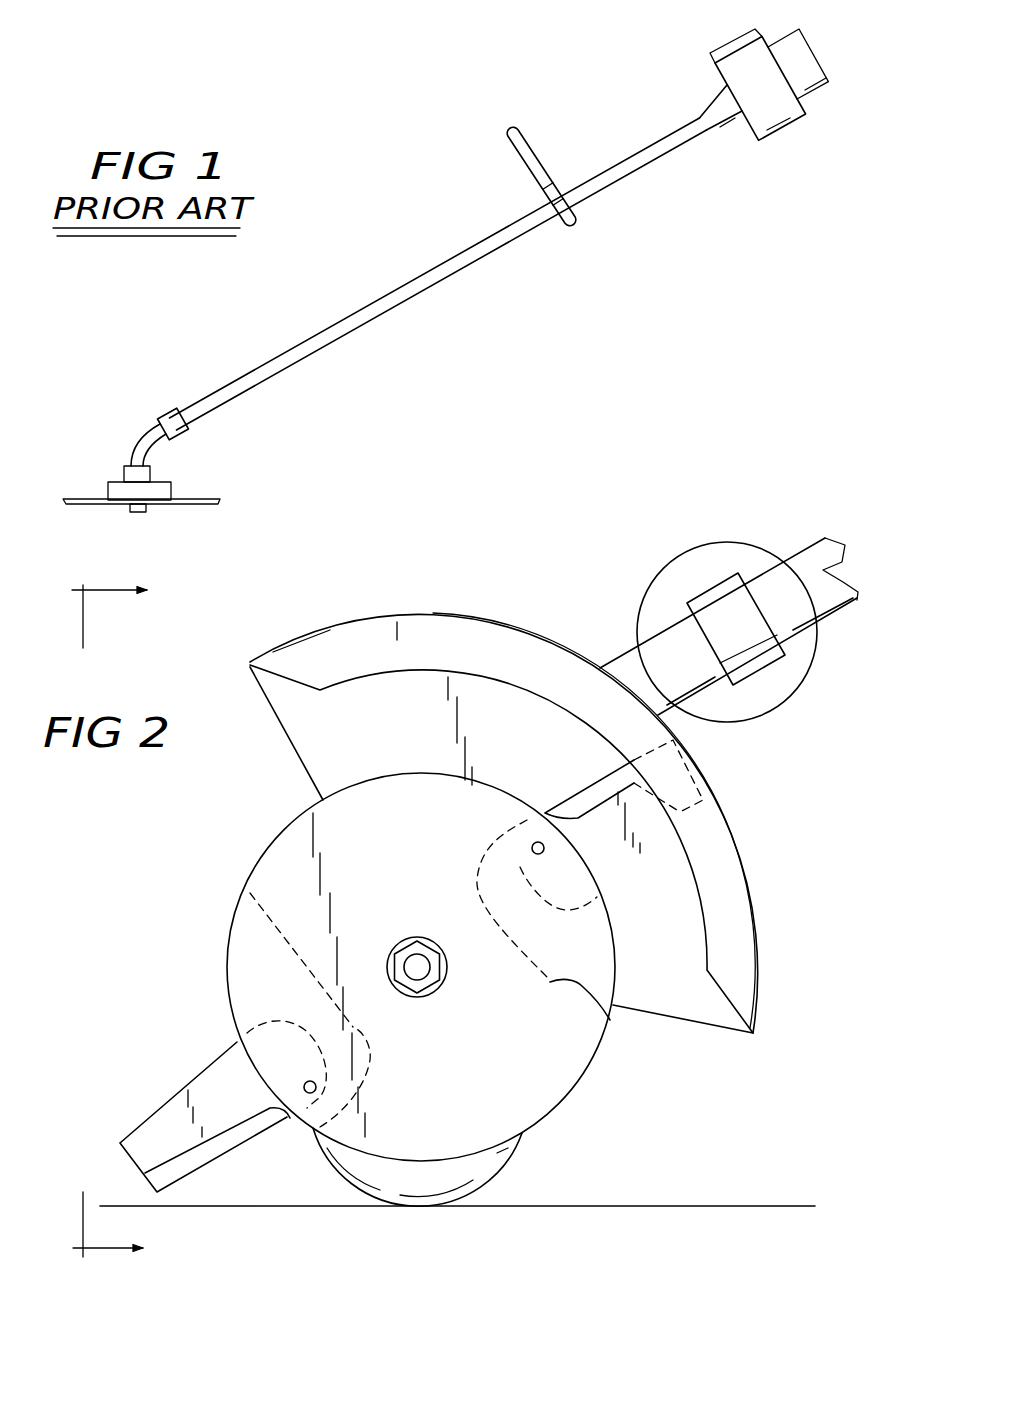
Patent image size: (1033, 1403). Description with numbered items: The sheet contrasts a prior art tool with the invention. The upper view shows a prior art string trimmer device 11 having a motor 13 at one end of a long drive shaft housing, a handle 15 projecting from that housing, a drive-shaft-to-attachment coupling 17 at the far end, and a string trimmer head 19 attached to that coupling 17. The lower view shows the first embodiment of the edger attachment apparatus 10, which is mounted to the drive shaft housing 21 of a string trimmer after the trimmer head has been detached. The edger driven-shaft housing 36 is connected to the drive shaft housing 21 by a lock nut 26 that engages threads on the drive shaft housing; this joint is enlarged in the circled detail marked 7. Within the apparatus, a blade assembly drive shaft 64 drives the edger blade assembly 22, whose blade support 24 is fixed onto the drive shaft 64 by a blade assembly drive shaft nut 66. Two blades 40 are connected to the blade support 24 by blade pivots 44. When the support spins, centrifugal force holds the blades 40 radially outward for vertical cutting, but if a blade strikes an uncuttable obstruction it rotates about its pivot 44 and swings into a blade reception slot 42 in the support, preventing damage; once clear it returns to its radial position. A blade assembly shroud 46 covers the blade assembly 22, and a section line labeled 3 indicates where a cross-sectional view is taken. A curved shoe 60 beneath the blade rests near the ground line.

In FIG. 1, the string trimmer device 11 is at (384, 203).
In FIG. 1, the motor 13 is at (783, 123).
In FIG. 1, the handle 15 is at (568, 223).
In FIG. 1, the drive-shaft-to-attachment coupling 17 is at (154, 406).
In FIG. 1, the string trimmer head 19 is at (199, 471).
In FIG. 2, the edger attachment apparatus 10 is at (477, 593).
In FIG. 2, the section line 3- 3 is at (103, 921).
In FIG. 2, the detail view 7 is at (682, 552).
In FIG. 2, the drive shaft housing 21 is at (805, 563).
In FIG. 2, the edger blade assembly 22 is at (247, 853).
In FIG. 2, the blade support 24 is at (513, 1078).
In FIG. 2, the lock nut 26 is at (752, 668).
In FIG. 2, the edger driven-shaft housing 36 is at (667, 635).
In FIG. 2, the blades 40 is at (227, 1085).
In FIG. 2, the blade reception slots 42 is at (393, 970).
In FIG. 2, the blade pivots 44 is at (538, 842).
In FIG. 2, the blade assembly shroud 46 is at (378, 622).
In FIG. 2, the shoe 60 is at (472, 1170).
In FIG. 2, the blade assembly drive shaft 64 is at (387, 985).
In FIG. 2, the blade assembly drive shaft nut 66 is at (400, 960).